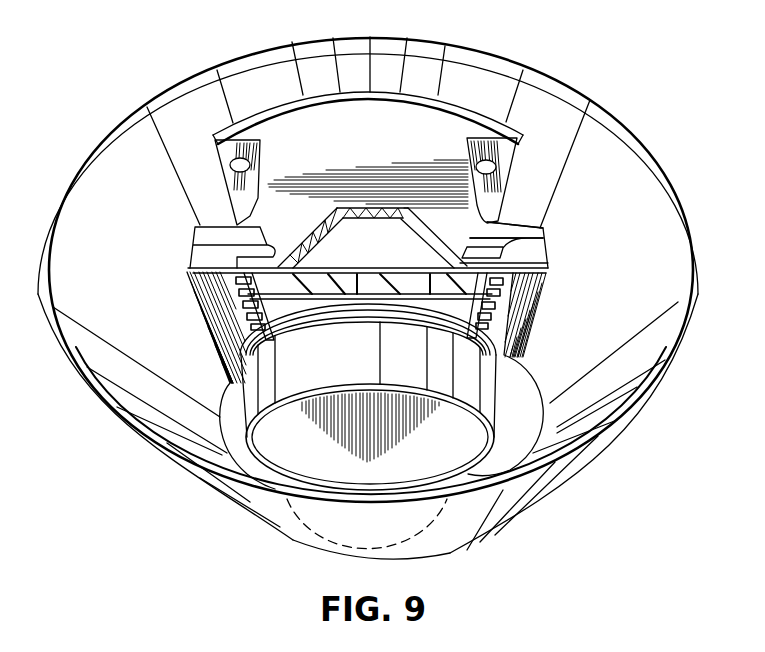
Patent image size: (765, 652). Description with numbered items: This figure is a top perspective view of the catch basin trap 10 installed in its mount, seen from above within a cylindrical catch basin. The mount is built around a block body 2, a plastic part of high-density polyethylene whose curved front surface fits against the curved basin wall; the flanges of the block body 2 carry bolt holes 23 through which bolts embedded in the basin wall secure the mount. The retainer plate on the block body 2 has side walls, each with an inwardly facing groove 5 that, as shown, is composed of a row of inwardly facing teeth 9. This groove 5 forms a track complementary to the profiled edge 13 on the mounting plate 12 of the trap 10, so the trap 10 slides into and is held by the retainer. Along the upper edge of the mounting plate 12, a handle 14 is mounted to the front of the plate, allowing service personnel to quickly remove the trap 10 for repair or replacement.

The block body 2 is at (378, 153).
The groove 5 is at (516, 237).
The inwardly facing teeth 9 is at (245, 290).
The catch basin trap 10 is at (357, 489).
The mounting plate 12 is at (197, 262).
The profiled edge 13 is at (548, 262).
The handle 14 is at (362, 214).
The bolt holes 23 is at (497, 167).